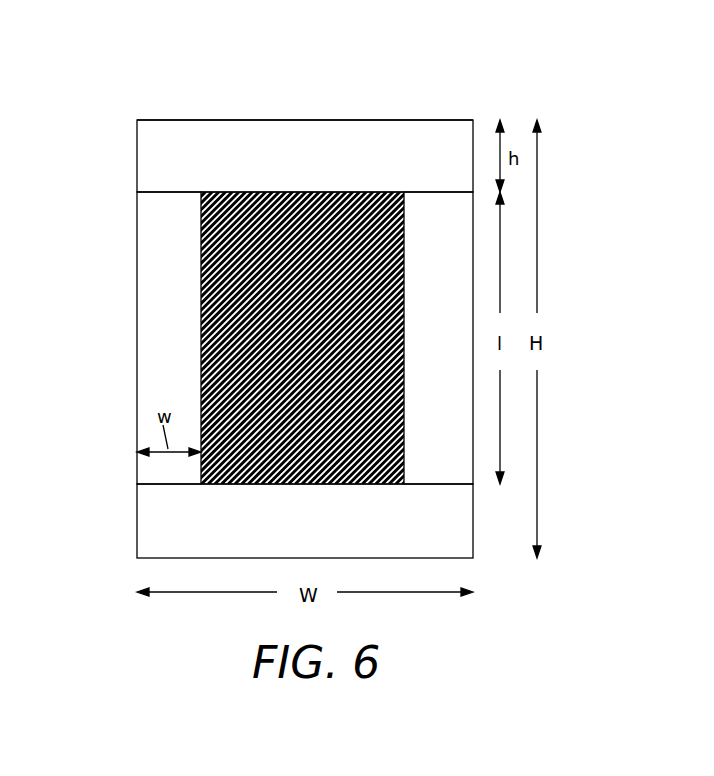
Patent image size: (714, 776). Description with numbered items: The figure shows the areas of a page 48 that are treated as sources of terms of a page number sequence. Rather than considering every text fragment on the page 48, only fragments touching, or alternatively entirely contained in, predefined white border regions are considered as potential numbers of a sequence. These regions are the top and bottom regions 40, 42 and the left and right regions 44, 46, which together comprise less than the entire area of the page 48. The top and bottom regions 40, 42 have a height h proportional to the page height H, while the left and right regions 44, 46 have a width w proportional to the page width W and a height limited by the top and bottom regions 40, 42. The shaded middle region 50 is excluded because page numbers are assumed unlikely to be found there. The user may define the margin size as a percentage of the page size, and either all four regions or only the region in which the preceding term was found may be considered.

The top region 40 is at (148, 152).
The bottom region 42 is at (182, 528).
The left region 44 is at (148, 362).
The right region 46 is at (451, 467).
The page 48 is at (303, 120).
The shaded middle region 50 is at (202, 305).